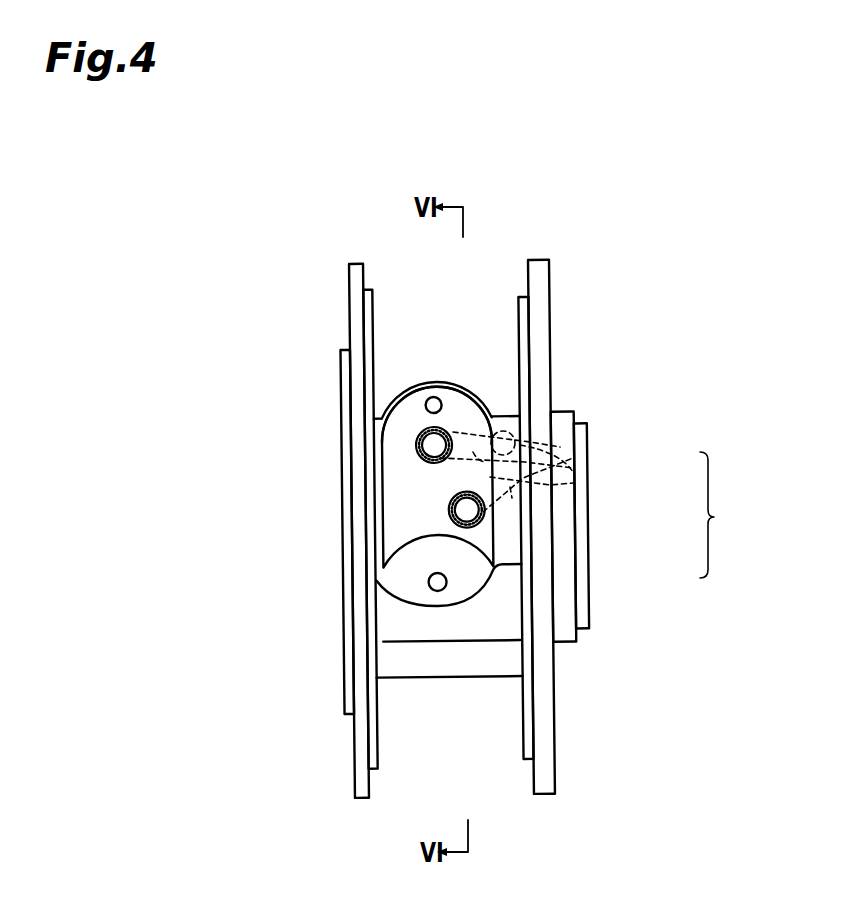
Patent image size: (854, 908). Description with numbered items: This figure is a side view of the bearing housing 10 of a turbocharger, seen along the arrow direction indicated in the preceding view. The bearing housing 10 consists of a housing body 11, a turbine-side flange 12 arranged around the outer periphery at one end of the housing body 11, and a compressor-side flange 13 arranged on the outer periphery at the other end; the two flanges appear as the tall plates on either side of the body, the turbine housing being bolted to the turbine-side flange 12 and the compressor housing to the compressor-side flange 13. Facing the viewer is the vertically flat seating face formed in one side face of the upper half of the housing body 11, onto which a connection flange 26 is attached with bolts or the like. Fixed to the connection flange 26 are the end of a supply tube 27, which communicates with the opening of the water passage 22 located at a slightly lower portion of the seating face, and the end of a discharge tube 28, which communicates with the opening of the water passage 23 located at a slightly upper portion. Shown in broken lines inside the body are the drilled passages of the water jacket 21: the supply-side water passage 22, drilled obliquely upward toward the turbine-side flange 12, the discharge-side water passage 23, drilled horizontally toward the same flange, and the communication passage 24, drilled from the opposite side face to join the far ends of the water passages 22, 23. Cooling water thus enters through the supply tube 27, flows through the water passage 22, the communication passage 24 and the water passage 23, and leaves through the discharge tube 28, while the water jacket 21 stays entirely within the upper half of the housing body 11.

The bearing housing 10 is at (346, 303).
The housing body 11 is at (435, 372).
The turbine-side flange 12 is at (545, 752).
The compressor-side flange 13 is at (357, 750).
The water jacket 21 is at (724, 515).
The water passage 22 is at (540, 530).
The water passage 23 is at (540, 483).
The communication passage 24 is at (560, 447).
The connection flange 26 is at (397, 417).
The supply tube 27 is at (448, 510).
The discharge tube 28 is at (413, 446).